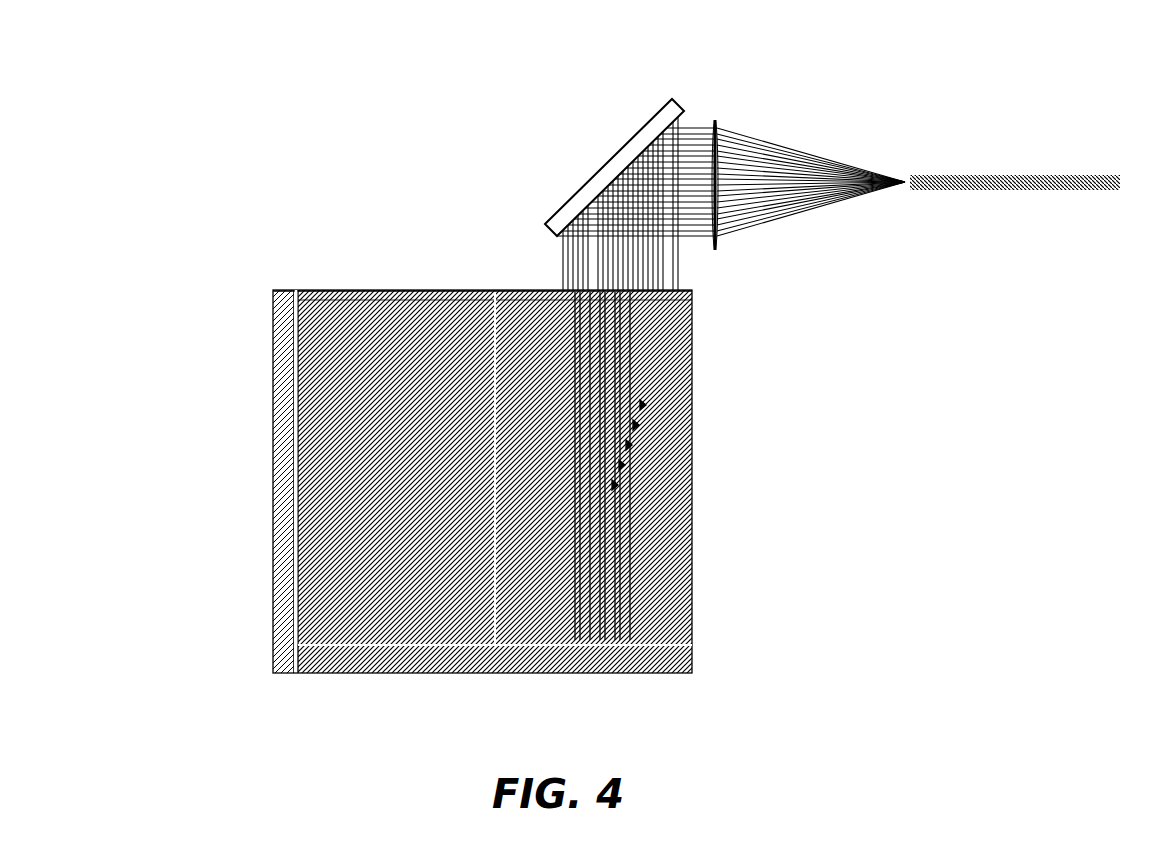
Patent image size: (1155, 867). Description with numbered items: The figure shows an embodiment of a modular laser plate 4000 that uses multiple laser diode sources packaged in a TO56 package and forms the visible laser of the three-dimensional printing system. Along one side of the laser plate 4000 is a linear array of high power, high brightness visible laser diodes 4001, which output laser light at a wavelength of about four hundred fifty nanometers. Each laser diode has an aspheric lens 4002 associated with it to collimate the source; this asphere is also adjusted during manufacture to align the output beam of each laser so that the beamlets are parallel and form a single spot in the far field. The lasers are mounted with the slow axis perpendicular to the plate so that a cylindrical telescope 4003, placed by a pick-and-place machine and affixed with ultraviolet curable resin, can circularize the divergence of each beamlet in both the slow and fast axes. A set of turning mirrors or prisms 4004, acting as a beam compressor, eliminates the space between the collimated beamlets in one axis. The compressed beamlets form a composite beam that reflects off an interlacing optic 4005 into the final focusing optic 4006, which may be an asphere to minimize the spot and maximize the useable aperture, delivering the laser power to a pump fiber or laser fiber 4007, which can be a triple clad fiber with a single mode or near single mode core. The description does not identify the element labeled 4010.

The laser plate 4000 is at (430, 481).
The visible laser diodes 4001 is at (262, 395).
The aspheric lens 4002 is at (287, 376).
The cylindrical telescope 4003 is at (478, 291).
The turning mirrors or prisms 4004 is at (626, 472).
The interlacing optic 4005 is at (597, 149).
The final focusing optic 4006 is at (724, 114).
The laser fiber 4007 is at (1034, 190).
The panel edge / frame 4010 is at (288, 293).